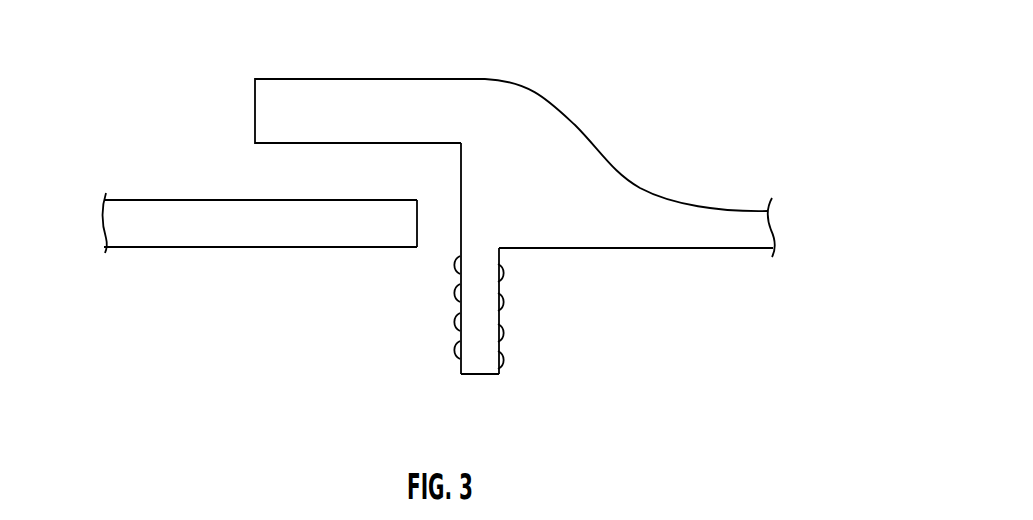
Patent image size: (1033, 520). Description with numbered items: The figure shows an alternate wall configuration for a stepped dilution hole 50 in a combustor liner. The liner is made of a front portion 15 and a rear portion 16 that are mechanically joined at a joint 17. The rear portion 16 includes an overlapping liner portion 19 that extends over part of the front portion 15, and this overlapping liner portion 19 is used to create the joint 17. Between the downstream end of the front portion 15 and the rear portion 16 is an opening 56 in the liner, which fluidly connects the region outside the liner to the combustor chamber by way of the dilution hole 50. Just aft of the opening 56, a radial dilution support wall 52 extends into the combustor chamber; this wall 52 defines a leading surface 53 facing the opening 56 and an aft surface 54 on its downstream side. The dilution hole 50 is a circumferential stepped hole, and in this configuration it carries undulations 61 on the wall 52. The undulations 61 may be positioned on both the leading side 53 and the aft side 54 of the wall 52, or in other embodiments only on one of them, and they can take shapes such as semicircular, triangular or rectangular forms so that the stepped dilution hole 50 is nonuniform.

The dilution hole 50 is at (205, 143).
The joint 17 is at (553, 72).
The overlapping liner portion 19 is at (300, 79).
The front portion 15 is at (220, 248).
The opening 56 is at (416, 248).
The aft surface 54 is at (500, 253).
The rear portion 16 is at (645, 249).
The undulations 61 is at (452, 289).
The leading surface 53 is at (456, 366).
The radial dilution support wall 52 is at (478, 376).